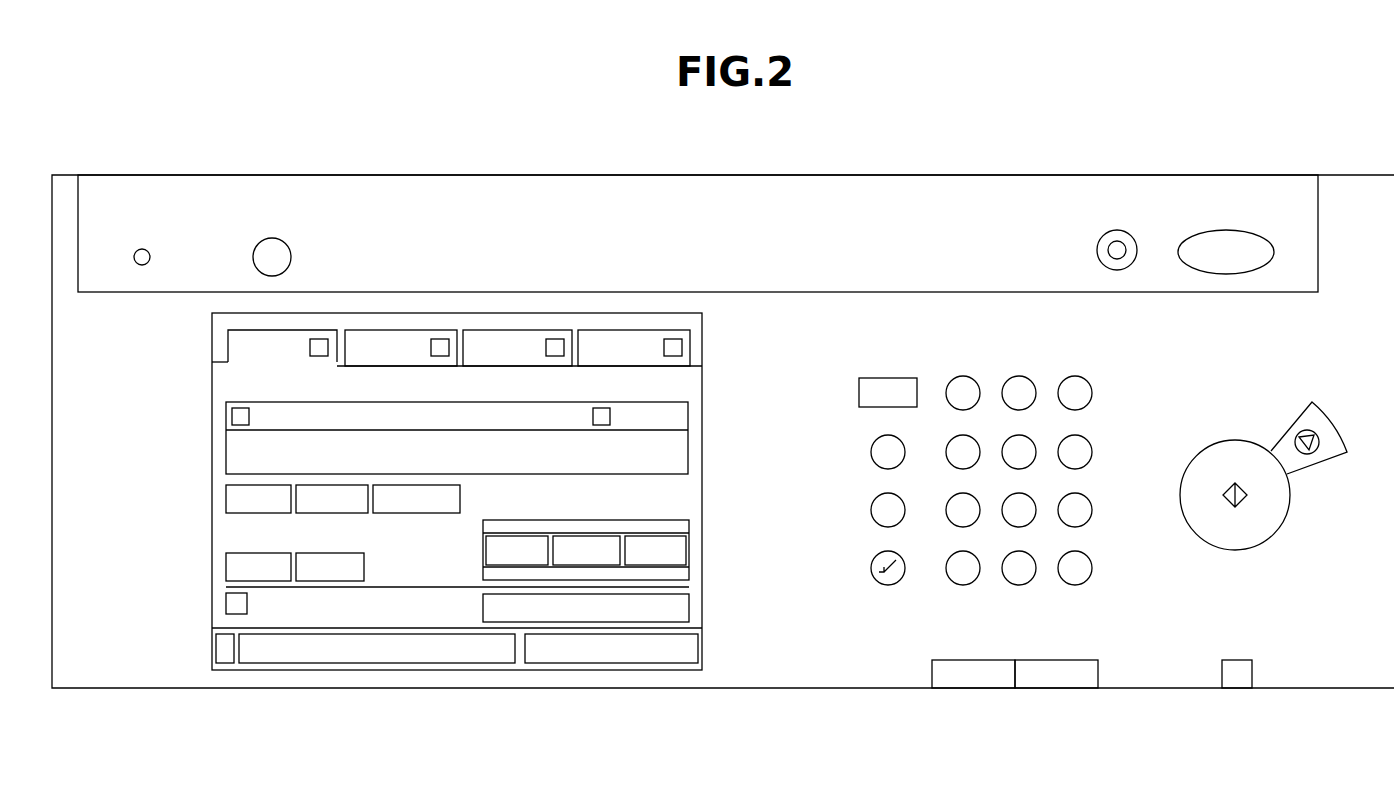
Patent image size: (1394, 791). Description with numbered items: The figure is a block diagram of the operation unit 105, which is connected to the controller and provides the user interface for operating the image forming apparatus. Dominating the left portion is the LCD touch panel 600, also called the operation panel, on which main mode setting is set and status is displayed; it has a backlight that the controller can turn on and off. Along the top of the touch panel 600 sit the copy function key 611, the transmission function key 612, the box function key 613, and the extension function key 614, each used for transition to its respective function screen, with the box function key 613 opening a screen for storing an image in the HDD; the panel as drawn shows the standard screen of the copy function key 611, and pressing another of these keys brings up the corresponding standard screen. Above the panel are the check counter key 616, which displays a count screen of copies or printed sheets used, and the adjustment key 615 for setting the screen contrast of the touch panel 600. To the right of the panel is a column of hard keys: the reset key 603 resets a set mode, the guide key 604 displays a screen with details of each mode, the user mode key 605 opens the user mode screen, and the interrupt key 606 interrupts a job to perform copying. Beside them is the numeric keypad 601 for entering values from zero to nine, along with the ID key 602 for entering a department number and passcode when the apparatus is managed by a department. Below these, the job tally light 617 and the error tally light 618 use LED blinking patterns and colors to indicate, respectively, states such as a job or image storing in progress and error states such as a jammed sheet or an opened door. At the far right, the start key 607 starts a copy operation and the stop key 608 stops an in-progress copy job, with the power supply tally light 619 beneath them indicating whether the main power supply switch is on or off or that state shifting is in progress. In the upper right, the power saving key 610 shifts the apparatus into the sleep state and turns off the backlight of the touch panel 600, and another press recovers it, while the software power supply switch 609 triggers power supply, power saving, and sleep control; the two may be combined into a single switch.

The operation unit 105 is at (167, 658).
The LCD touch panel 600 is at (457, 436).
The numeric keypad 601 is at (1019, 368).
The ID key 602 is at (946, 567).
The reset key 603 is at (914, 393).
The guide key 604 is at (871, 450).
The user mode key 605 is at (871, 510).
The interrupt key 606 is at (888, 585).
The start key 607 is at (1205, 513).
The stop key 608 is at (1332, 446).
The software power supply switch 609 is at (1226, 230).
The power saving key 610 is at (1127, 248).
The copy function key 611 is at (300, 338).
The transmission function key 612 is at (430, 338).
The box function key 613 is at (525, 338).
The extension function key 614 is at (636, 338).
The adjustment key 615 is at (292, 255).
The check counter key 616 is at (151, 255).
The job tally light 617 is at (975, 672).
The error tally light 618 is at (1055, 672).
The power supply tally light 619 is at (1237, 672).